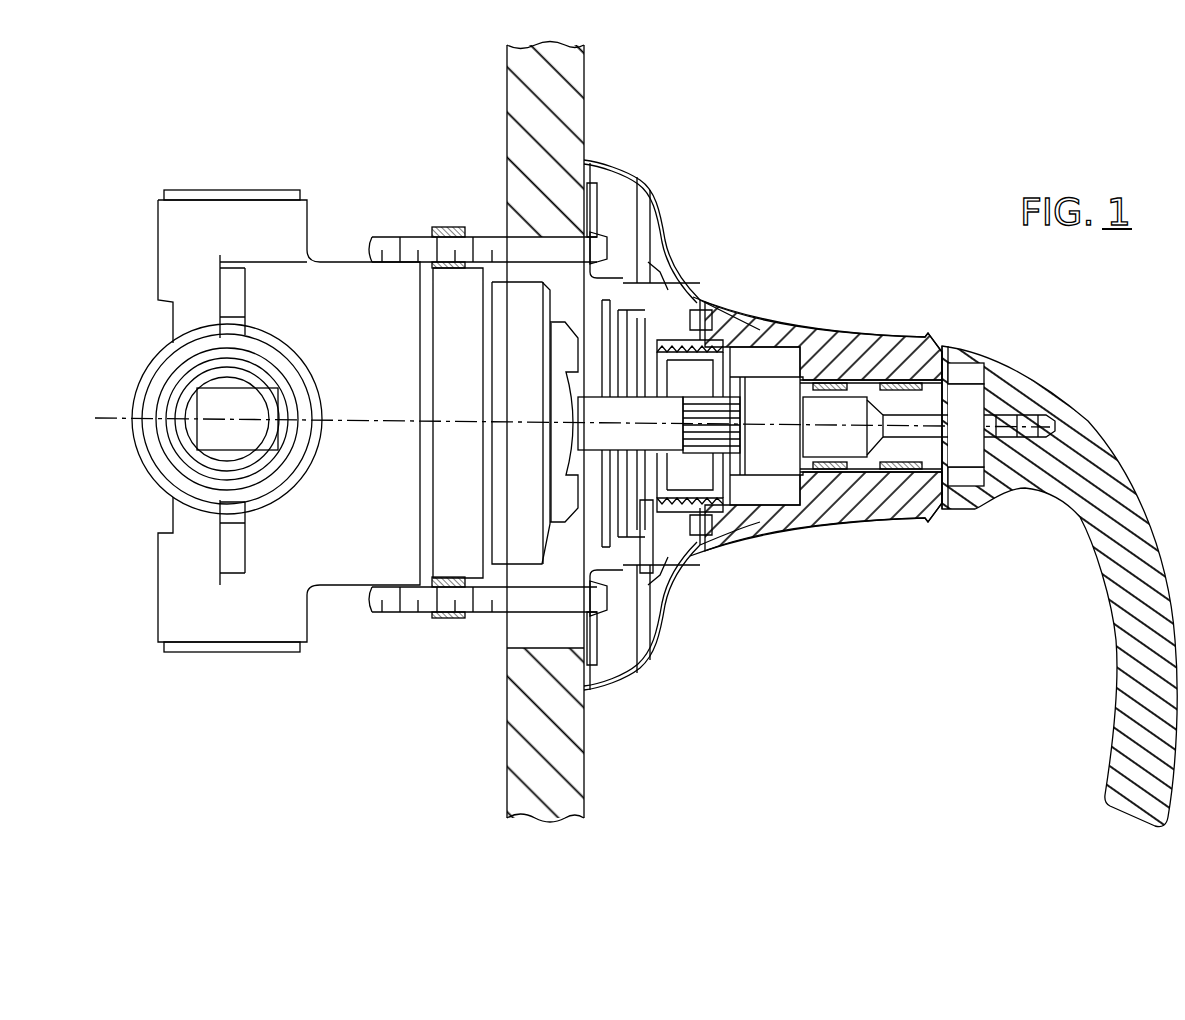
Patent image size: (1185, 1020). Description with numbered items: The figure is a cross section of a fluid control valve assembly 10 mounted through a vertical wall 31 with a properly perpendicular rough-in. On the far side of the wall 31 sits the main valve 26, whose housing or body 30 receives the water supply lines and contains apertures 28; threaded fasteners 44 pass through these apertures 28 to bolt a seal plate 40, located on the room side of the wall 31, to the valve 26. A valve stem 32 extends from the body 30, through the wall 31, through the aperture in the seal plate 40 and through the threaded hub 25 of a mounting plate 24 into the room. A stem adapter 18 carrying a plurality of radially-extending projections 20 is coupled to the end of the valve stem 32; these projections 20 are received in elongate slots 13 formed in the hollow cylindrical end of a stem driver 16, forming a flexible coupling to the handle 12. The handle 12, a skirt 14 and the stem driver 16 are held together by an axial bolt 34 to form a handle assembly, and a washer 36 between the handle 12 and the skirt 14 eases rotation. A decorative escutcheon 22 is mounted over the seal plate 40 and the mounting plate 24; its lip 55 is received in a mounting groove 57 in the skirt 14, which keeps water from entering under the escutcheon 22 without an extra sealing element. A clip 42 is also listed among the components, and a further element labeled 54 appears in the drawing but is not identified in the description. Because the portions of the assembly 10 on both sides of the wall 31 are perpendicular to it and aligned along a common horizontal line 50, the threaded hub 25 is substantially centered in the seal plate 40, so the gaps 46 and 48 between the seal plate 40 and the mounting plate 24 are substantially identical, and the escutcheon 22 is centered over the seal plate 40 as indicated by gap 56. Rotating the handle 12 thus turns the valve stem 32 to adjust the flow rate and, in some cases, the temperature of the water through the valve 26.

The valve assembly 10 is at (810, 244).
The handle 12 is at (1128, 462).
The slots 13 is at (800, 350).
The skirt 14 is at (775, 360).
The stem driver 16 is at (877, 350).
The stem adapter 18 is at (757, 385).
The radially-extending projections 20 is at (740, 480).
The decorative escutcheon 22 is at (675, 593).
The mounting plate 24 is at (642, 315).
The threaded hub 25 is at (722, 340).
The main valve 26 is at (262, 186).
The apertures 28 is at (424, 236).
The housing or body 30 is at (312, 222).
The wall 31 is at (590, 78).
The valve stem 32 is at (708, 535).
The axial bolt 34 is at (1020, 418).
The washer 36 is at (948, 350).
The seal plate 40 is at (653, 240).
The clip 42 is at (693, 295).
The threaded fasteners 44 is at (618, 250).
The gap 46 is at (647, 273).
The gap 48 is at (650, 625).
The horizontal line 50 is at (100, 420).
The upper clip 54 is at (598, 178).
The lip 55 is at (700, 536).
The gap 56 is at (597, 677).
The mounting groove 57 is at (717, 540).